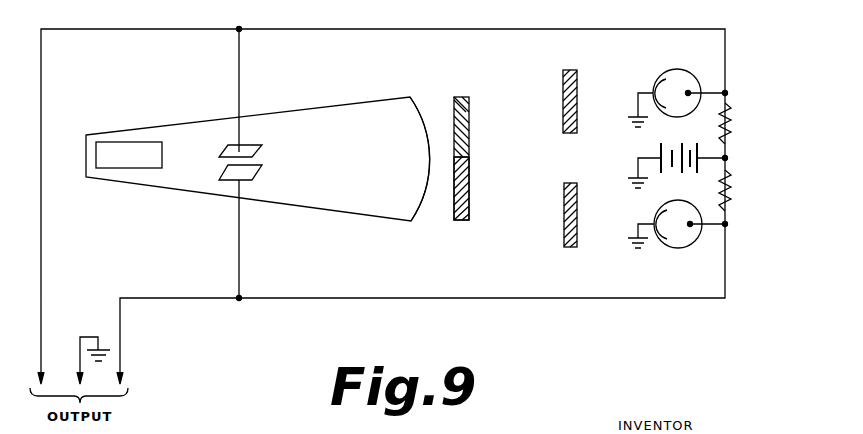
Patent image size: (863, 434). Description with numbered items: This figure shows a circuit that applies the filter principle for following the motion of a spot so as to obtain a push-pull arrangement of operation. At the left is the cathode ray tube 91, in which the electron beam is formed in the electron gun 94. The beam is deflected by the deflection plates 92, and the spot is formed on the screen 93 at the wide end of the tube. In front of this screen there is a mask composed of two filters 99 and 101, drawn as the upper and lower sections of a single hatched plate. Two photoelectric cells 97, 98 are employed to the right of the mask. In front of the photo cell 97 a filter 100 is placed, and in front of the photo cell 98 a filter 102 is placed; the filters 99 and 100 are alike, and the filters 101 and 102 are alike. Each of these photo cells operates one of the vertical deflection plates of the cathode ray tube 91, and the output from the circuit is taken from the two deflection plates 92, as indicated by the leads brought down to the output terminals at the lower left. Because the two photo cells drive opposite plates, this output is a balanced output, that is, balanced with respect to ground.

The cathode ray tube 91 is at (167, 137).
The deflection plates 92 is at (248, 147).
The screen 93 is at (423, 203).
The electron gun 94 is at (115, 152).
The photoelectric cell 97 is at (683, 78).
The photoelectric cell 98 is at (697, 232).
The filter 99 is at (470, 107).
The filter 100 is at (577, 87).
The filter 101 is at (469, 197).
The filter 102 is at (577, 230).